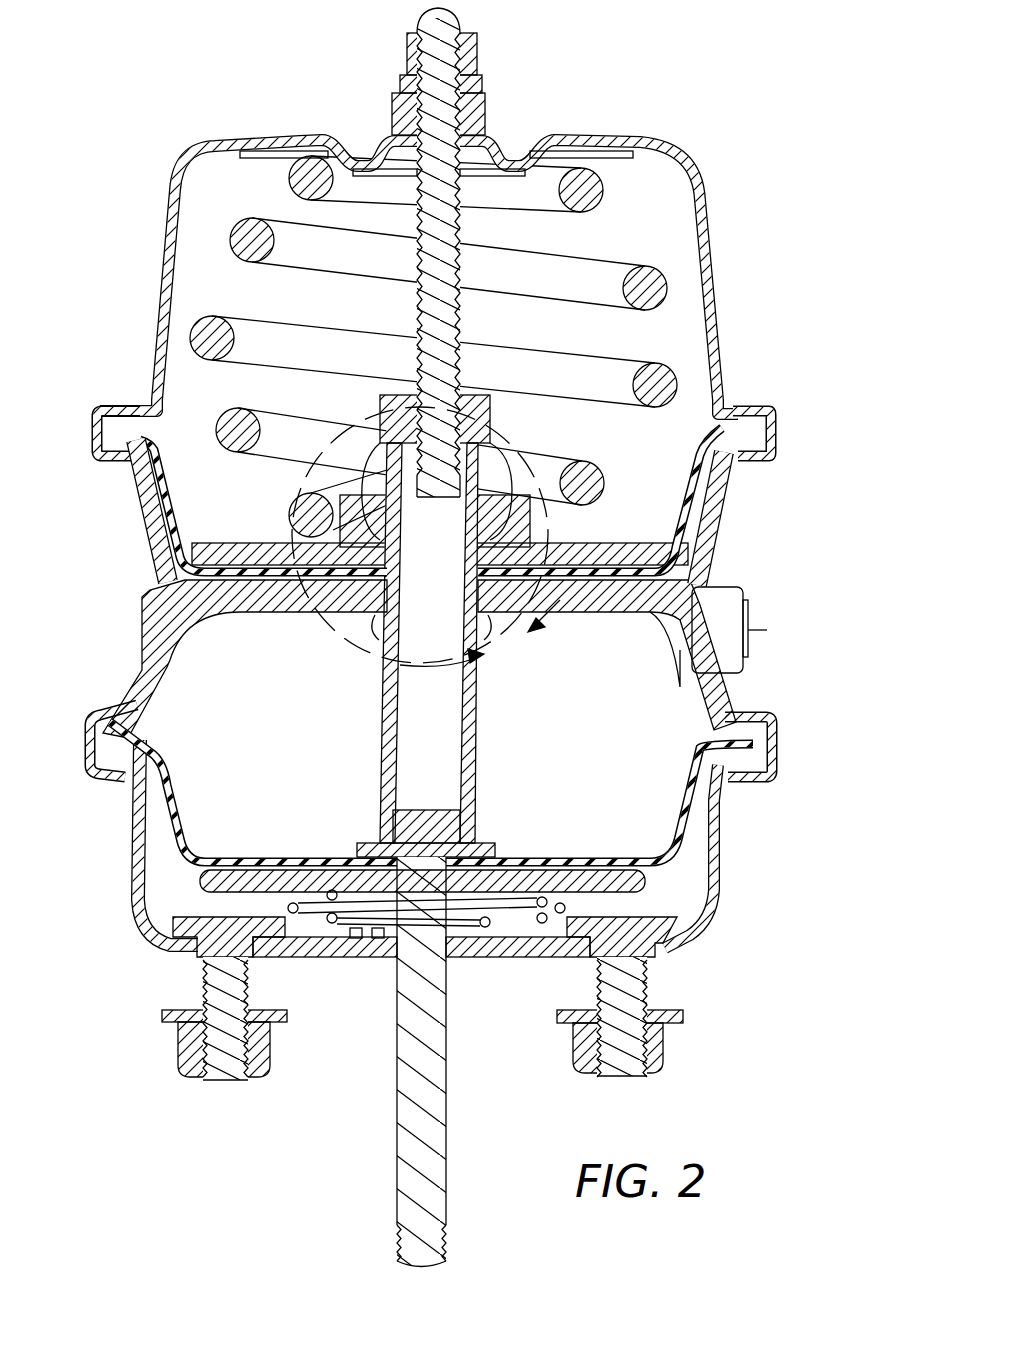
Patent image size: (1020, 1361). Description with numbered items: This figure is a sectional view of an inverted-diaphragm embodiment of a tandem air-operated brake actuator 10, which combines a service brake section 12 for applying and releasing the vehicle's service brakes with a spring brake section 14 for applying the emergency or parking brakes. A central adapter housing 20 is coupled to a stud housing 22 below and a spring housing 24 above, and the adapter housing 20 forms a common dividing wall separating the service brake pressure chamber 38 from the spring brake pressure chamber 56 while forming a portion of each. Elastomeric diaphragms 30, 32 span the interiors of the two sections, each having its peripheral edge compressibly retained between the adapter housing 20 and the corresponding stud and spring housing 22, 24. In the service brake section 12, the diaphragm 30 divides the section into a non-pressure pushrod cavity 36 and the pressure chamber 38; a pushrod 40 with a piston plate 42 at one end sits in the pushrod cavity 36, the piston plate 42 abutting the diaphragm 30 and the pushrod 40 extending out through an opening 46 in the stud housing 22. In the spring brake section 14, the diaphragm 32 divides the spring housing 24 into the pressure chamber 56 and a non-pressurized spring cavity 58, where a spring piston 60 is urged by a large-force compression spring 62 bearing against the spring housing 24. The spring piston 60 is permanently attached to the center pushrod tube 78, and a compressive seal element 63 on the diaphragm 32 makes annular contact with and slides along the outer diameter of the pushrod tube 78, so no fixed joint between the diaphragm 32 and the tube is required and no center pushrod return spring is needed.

The air-operated brake actuator 10 is at (450, 637).
The service brake section 12 is at (432, 941).
The spring brake section 14 is at (450, 432).
The adapter housing 20 is at (698, 628).
The stud housing 22 is at (725, 856).
The spring housing 24 is at (716, 275).
The diaphragm 30 is at (177, 803).
The diaphragm 32 is at (214, 502).
The pushrod cavity 36 is at (670, 898).
The pressure chamber 38 is at (602, 768).
The pushrod 40 is at (447, 1122).
The piston plate 42 is at (590, 880).
The opening 46 is at (388, 972).
The pressure chamber 56 is at (688, 560).
The spring cavity 58 is at (483, 306).
The spring piston 60 is at (632, 548).
The compression spring 62 is at (312, 165).
The compressive seal element 63 is at (490, 460).
The pushrod tube 78 is at (390, 622).